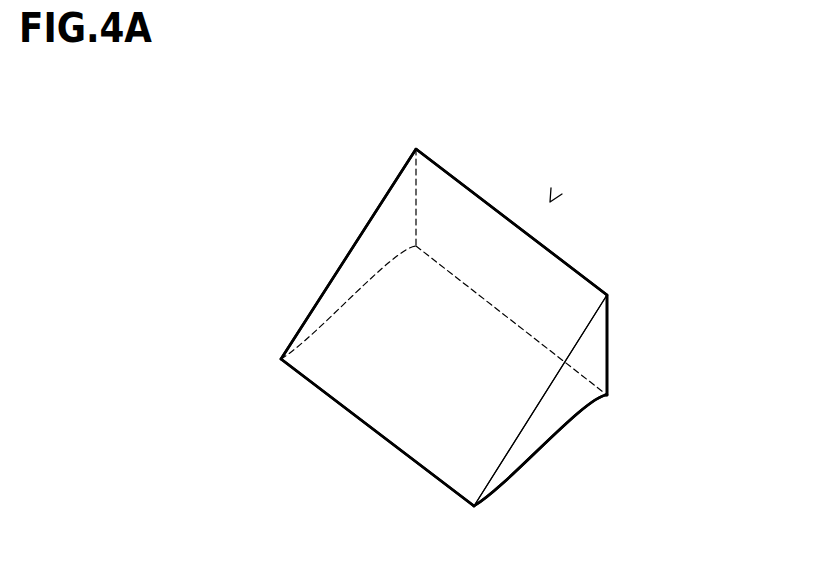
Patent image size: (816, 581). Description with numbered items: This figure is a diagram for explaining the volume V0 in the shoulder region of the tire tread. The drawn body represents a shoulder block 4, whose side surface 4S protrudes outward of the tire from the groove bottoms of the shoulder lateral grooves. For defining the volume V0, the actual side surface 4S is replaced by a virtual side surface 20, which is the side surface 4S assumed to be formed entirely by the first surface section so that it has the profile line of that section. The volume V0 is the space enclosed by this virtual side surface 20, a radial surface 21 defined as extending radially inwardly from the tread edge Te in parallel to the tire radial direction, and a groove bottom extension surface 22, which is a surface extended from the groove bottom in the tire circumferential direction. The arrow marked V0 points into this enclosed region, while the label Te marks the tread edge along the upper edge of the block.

The shoulder block 4 is at (502, 167).
The volume V0 is at (550, 202).
The tread edge Te is at (568, 263).
The side surface 4S is at (333, 272).
The radial surface 21 is at (608, 346).
The groove bottom extension surface 22 is at (539, 460).
The virtual side surface 20 is at (404, 383).